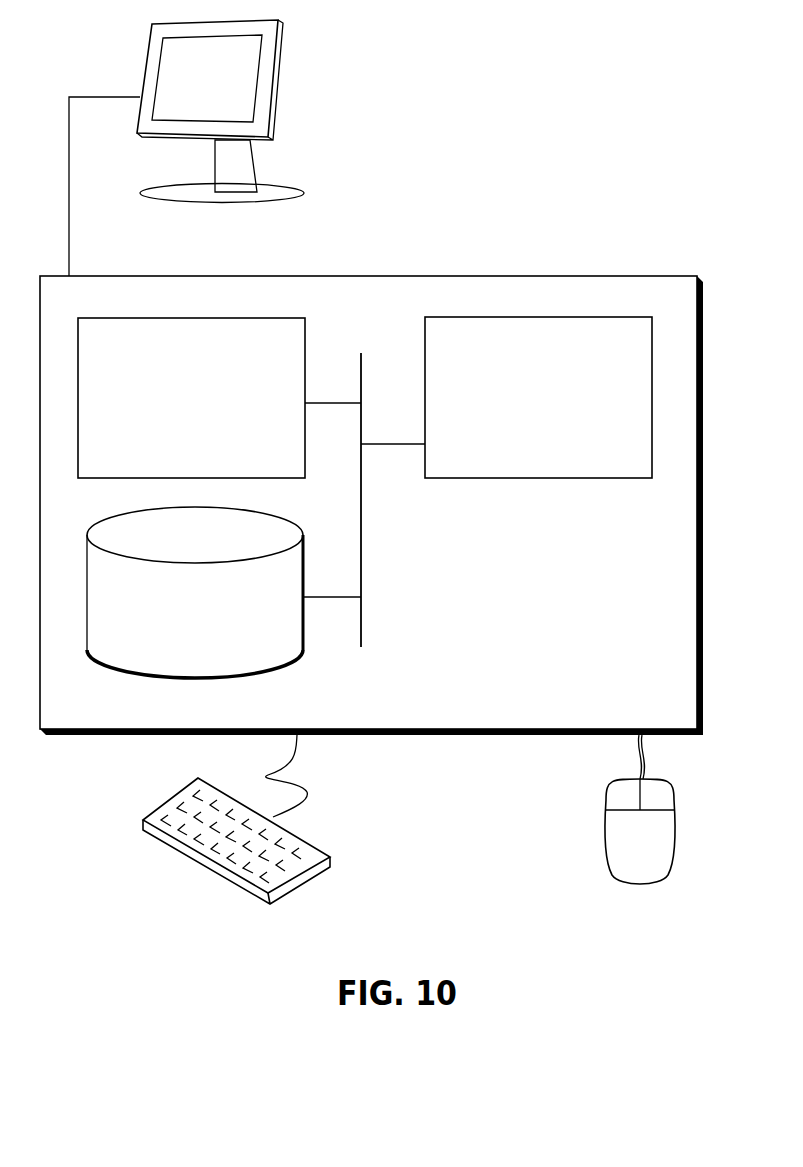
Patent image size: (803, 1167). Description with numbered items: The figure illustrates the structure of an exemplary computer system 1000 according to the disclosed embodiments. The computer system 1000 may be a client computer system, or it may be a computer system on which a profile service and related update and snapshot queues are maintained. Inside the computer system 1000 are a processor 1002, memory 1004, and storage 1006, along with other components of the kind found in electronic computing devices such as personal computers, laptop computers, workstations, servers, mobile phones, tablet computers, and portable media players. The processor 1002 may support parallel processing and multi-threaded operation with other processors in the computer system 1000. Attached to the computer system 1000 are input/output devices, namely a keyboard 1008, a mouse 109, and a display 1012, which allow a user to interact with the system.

The computer system 1000 is at (415, 255).
The processor 1002 is at (517, 411).
The memory 1004 is at (166, 409).
The storage 1006 is at (172, 621).
The keyboard 1008 is at (163, 842).
The display 1012 is at (186, 148).
The mouse 109 is at (621, 849).